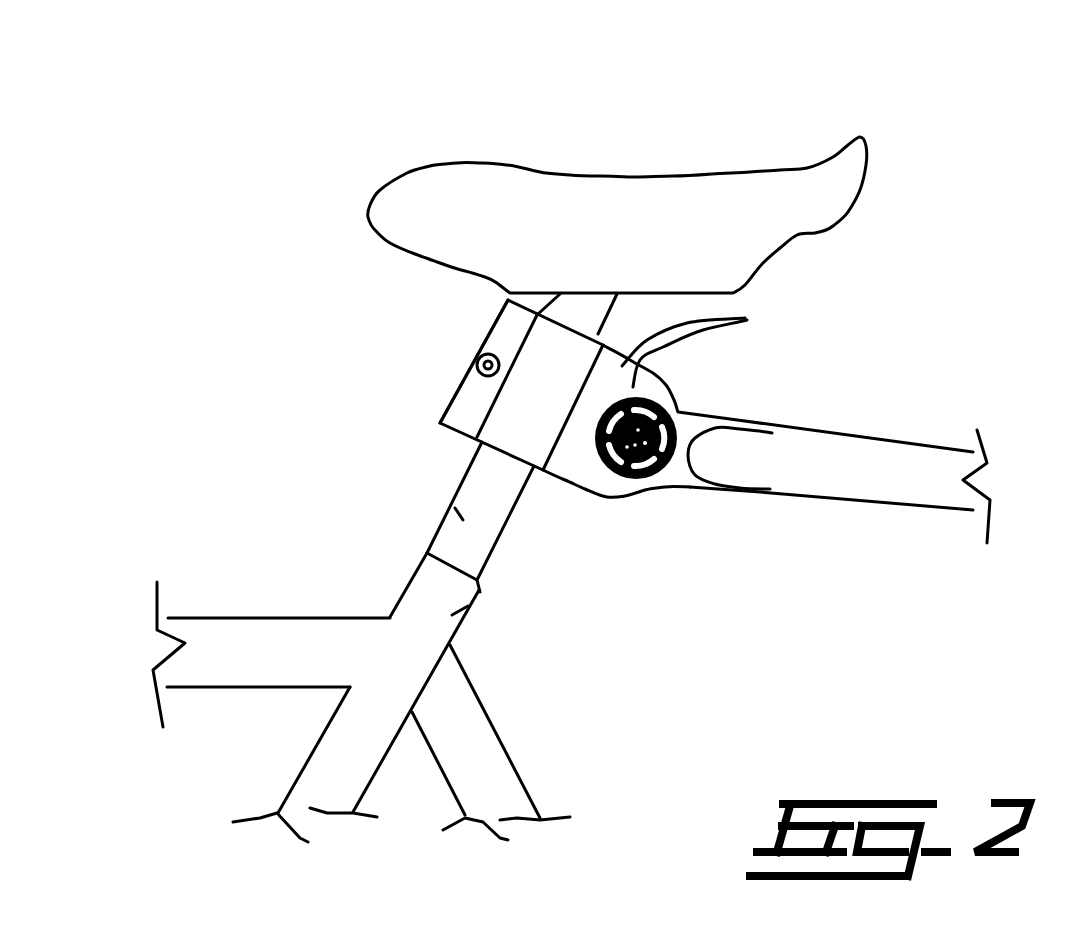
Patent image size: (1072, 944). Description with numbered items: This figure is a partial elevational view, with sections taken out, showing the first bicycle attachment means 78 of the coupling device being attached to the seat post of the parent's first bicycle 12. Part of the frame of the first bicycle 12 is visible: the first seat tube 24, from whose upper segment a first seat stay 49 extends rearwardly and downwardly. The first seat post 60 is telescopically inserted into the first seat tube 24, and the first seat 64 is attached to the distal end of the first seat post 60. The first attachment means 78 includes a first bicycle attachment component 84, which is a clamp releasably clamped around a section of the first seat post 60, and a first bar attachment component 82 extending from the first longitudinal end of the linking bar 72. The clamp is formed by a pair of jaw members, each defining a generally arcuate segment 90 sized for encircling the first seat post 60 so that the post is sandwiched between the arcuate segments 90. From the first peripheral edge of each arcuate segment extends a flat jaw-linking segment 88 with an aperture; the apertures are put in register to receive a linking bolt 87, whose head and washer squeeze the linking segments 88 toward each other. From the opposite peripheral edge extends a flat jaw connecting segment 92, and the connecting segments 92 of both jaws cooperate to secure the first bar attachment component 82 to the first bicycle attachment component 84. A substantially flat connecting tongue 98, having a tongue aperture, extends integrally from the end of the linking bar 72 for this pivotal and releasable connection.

The first bicycle 12 is at (242, 600).
The first seat tube 24 is at (470, 600).
The first seat stay 49 is at (492, 770).
The first seat post 60 is at (458, 510).
The first seat 64 is at (558, 205).
The linking bar 72 is at (887, 481).
The first bicycle attachment means 78 is at (605, 518).
The first bar attachment component 82 is at (777, 410).
The first bicycle attachment component 84 is at (443, 376).
The linking bolt 87 is at (476, 351).
The jaw-linking segment 88 is at (510, 343).
The arcuate segment 90 is at (483, 440).
The jaw connecting segment 92 is at (747, 320).
The connecting tongue 98 is at (683, 480).